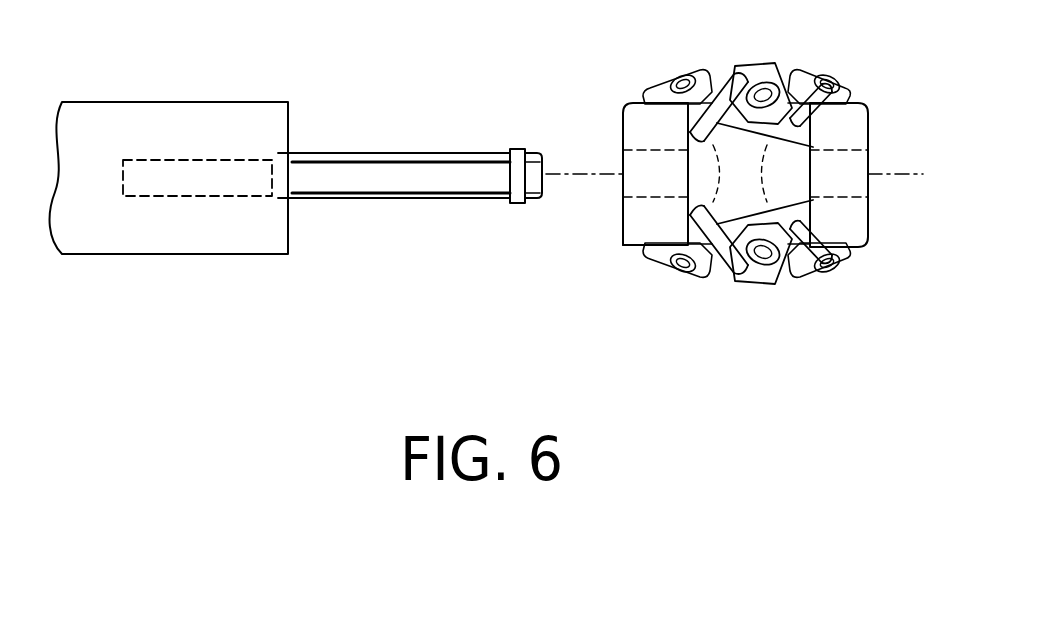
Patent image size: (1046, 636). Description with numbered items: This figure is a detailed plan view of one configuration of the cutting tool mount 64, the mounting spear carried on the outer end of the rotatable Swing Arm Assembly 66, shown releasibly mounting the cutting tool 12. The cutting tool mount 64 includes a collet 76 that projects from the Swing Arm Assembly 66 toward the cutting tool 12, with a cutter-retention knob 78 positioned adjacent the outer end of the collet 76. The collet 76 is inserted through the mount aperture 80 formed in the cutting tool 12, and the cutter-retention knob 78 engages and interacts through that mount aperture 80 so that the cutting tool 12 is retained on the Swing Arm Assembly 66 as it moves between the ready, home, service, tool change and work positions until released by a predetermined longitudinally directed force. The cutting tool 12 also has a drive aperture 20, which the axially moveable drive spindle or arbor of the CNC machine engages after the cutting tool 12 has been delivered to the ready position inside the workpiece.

The cutting tool 12 is at (872, 128).
The drive aperture 20 is at (728, 297).
The cutting tool mount 64 is at (347, 72).
The Swing Arm Assembly 66 is at (140, 93).
The collet 76 is at (382, 170).
The cutter-retention knob 78 is at (535, 167).
The mount aperture 80 is at (626, 206).